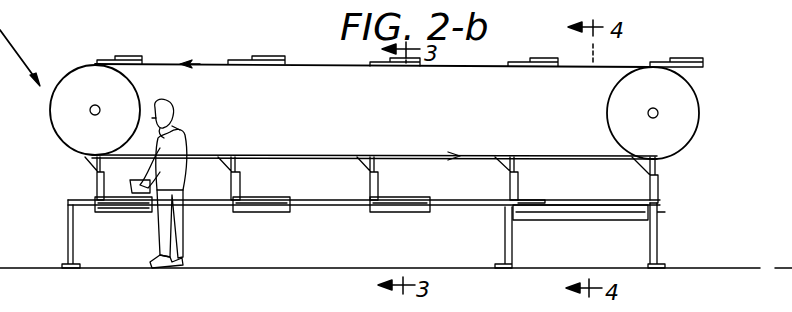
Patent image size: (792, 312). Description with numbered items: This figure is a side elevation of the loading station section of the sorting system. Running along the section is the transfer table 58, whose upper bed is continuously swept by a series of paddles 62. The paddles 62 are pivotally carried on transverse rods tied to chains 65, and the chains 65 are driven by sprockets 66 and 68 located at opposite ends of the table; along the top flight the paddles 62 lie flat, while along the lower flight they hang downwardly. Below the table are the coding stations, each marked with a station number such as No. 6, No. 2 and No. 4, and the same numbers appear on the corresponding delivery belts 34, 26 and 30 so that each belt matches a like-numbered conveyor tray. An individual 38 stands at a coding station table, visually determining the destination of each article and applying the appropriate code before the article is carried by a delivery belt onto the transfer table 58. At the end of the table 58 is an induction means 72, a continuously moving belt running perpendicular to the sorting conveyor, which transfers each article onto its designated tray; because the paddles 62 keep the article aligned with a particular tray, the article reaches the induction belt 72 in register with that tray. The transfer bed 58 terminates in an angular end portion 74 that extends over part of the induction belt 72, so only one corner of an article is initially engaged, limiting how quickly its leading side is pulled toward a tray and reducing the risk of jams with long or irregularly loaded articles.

The paddles 62 is at (685, 58).
The sprocket 68 is at (680, 132).
The sprocket 66 is at (55, 117).
The individual 38 is at (180, 128).
The chains 65 is at (313, 153).
The No. 6 coding station number 6 is at (112, 186).
The No. 2 coding station number 2 is at (255, 186).
The No. 4 coding station number 4 is at (397, 186).
The angular end portion 74 is at (522, 200).
The induction means 72 is at (591, 180).
The delivery belt 34 is at (126, 210).
The delivery belt 26 is at (272, 207).
The transfer table 58 is at (327, 209).
The delivery belt 30 is at (402, 213).